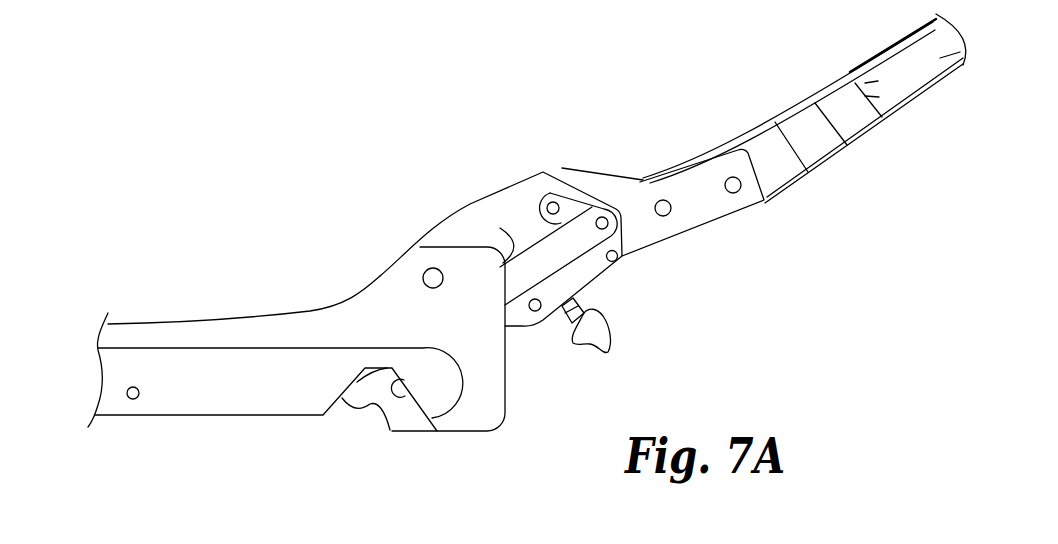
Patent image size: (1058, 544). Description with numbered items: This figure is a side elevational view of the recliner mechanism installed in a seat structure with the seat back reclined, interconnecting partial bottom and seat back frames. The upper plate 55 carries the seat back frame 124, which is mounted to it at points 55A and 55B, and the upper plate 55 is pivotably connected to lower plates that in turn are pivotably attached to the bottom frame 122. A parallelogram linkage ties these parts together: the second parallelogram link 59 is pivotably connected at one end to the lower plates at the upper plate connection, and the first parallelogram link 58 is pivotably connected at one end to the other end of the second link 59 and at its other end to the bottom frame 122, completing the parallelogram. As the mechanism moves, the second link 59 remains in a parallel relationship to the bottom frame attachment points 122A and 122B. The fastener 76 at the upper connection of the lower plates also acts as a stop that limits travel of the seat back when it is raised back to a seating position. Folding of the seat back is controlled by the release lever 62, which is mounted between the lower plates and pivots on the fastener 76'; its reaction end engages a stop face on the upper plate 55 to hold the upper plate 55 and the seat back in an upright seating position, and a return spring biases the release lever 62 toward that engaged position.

The bottom frame 122 is at (188, 324).
The bottom frame attachment point 122A is at (424, 270).
The bottom frame attachment point 122B is at (484, 287).
The first parallelogram link 58 is at (530, 250).
The second parallelogram link 59 is at (563, 187).
The fastener 76 is at (634, 288).
The fastener 76' is at (532, 347).
The release lever 62 is at (590, 343).
The upper plate 55 is at (694, 236).
The mounting point 55A is at (733, 176).
The mounting point 55B is at (662, 199).
The seat back frame 124 is at (870, 68).